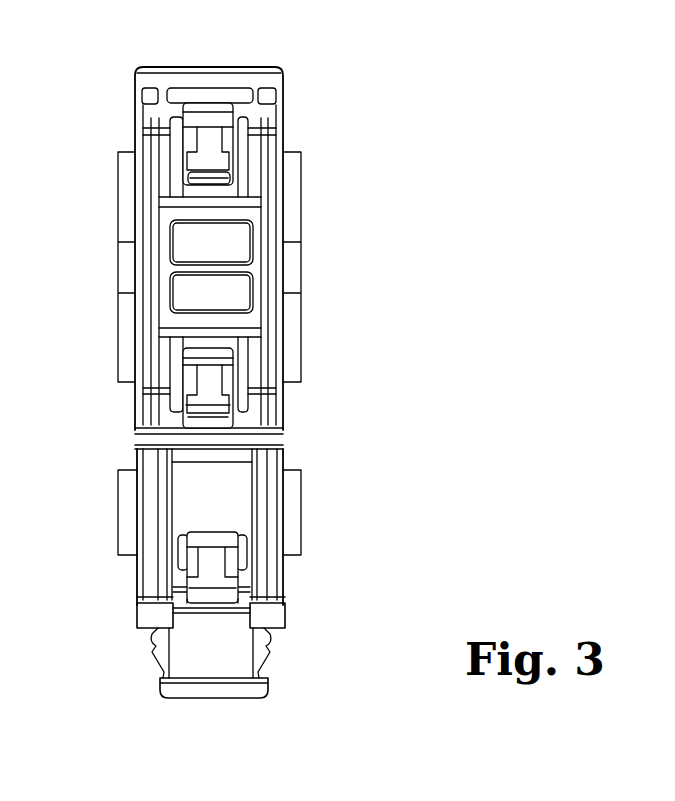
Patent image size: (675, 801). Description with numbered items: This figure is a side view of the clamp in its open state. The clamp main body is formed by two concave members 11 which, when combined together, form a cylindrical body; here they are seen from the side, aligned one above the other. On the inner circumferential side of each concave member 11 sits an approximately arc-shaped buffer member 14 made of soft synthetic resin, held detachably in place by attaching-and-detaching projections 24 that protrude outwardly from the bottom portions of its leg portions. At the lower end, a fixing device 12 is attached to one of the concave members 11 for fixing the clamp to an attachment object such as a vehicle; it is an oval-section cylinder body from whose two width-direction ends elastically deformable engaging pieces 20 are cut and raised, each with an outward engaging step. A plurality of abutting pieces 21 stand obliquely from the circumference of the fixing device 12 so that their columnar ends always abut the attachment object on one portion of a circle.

The concave member 11 is at (277, 125).
The fixing device 12 is at (211, 672).
The buffer member 14 is at (127, 200).
The engaging piece 20 is at (160, 645).
The abutting piece 21 is at (150, 618).
The attaching-and-detaching projection 24 is at (208, 108).